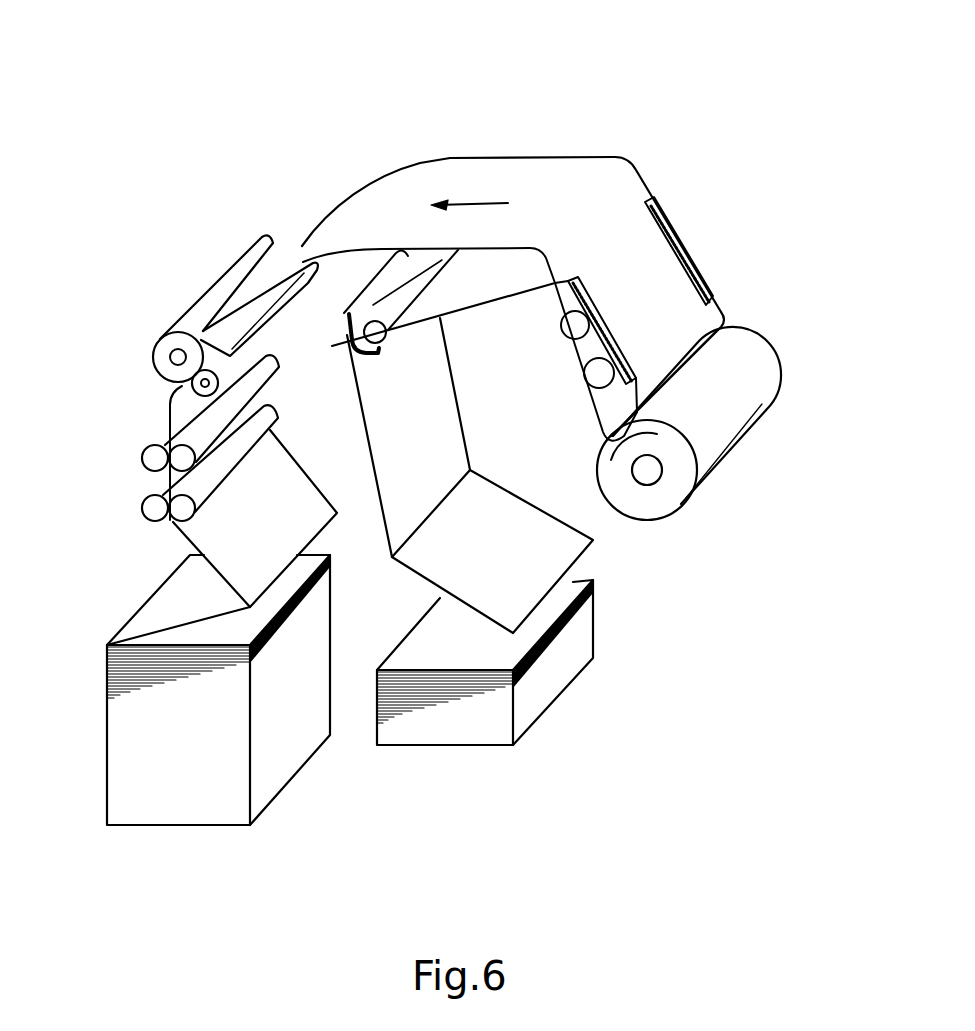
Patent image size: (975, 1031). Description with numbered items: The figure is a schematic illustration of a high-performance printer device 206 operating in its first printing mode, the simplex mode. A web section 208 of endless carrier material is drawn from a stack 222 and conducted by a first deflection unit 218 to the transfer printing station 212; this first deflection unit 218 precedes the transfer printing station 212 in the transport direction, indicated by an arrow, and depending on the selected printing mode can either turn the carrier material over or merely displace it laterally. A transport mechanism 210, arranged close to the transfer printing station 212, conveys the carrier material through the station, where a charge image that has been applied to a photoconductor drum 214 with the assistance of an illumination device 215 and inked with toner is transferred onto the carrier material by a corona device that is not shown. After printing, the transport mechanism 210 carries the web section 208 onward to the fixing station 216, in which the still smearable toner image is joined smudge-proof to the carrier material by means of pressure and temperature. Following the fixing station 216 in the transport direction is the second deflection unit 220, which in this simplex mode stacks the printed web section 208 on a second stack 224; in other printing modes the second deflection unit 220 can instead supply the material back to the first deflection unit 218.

The printer device 206 is at (303, 88).
The web section 208 is at (514, 166).
The transport mechanism 210 is at (710, 223).
The transfer printing station 212 is at (747, 316).
The photoconductor drum 214 is at (717, 470).
The illumination device 215 is at (773, 431).
The fixing station 216 is at (144, 317).
The first deflection unit 218 is at (346, 362).
The second deflection unit 220 is at (129, 487).
The stack 222 is at (540, 700).
The second stack 224 is at (280, 777).